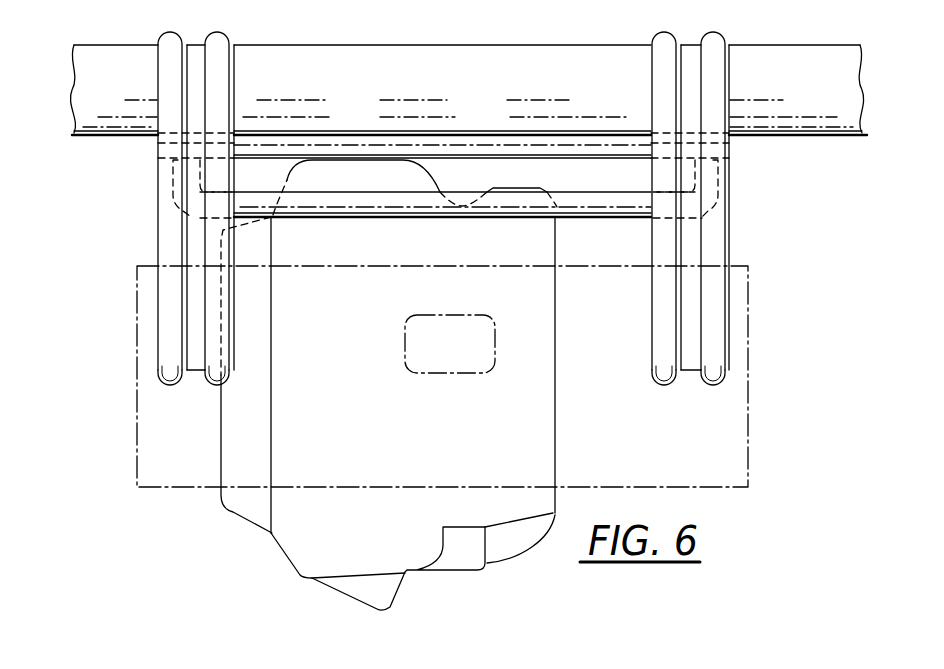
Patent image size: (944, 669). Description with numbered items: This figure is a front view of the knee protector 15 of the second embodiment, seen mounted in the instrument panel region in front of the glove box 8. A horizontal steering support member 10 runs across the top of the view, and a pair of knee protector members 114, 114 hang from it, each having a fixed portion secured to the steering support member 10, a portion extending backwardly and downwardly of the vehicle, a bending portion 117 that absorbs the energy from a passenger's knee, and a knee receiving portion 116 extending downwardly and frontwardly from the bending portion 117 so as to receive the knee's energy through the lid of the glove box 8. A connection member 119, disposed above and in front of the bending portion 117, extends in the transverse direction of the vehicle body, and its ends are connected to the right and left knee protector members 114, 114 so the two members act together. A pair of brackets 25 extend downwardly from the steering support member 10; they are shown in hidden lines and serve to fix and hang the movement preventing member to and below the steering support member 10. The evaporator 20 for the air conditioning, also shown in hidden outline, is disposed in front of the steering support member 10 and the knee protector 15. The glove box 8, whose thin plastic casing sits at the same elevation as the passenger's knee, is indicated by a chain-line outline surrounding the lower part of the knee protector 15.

The glove box 8 is at (752, 445).
The steering support member 10 is at (462, 50).
The knee protector 15 is at (757, 203).
The evaporator 20 is at (371, 172).
The brackets 25 is at (172, 193).
The knee protector members 114 is at (162, 172).
The knee receiving portion 116 is at (197, 368).
The bending portion 117 is at (190, 248).
The connection member 119 is at (458, 145).